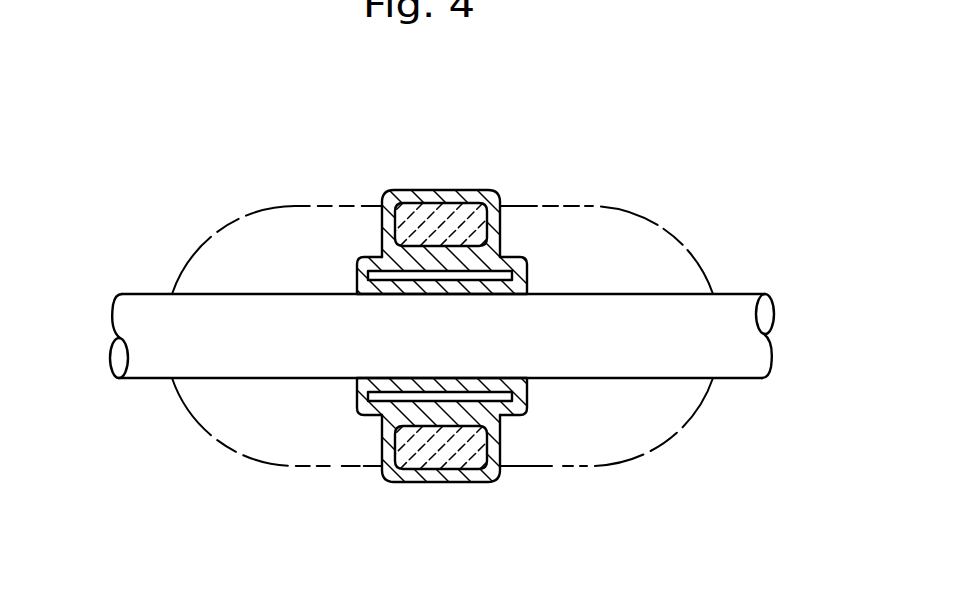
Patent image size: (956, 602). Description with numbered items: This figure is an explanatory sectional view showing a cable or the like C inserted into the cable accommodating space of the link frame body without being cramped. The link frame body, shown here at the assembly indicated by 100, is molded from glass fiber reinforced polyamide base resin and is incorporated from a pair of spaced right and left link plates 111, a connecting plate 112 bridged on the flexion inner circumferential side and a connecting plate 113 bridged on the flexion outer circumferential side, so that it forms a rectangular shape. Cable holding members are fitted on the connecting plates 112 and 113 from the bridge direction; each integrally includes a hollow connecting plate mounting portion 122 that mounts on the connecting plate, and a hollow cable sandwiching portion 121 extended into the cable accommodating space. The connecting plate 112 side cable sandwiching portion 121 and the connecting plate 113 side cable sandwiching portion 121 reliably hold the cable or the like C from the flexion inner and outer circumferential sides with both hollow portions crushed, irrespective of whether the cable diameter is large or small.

The mount assembly 100 is at (487, 322).
The link plate 111 is at (262, 206).
The connecting plate 112 is at (470, 453).
The connecting plate 113 is at (482, 220).
The cable sandwiching portion 121 is at (357, 272).
The connecting plate mounting portion 122 is at (445, 190).
The cable or the like C is at (143, 293).